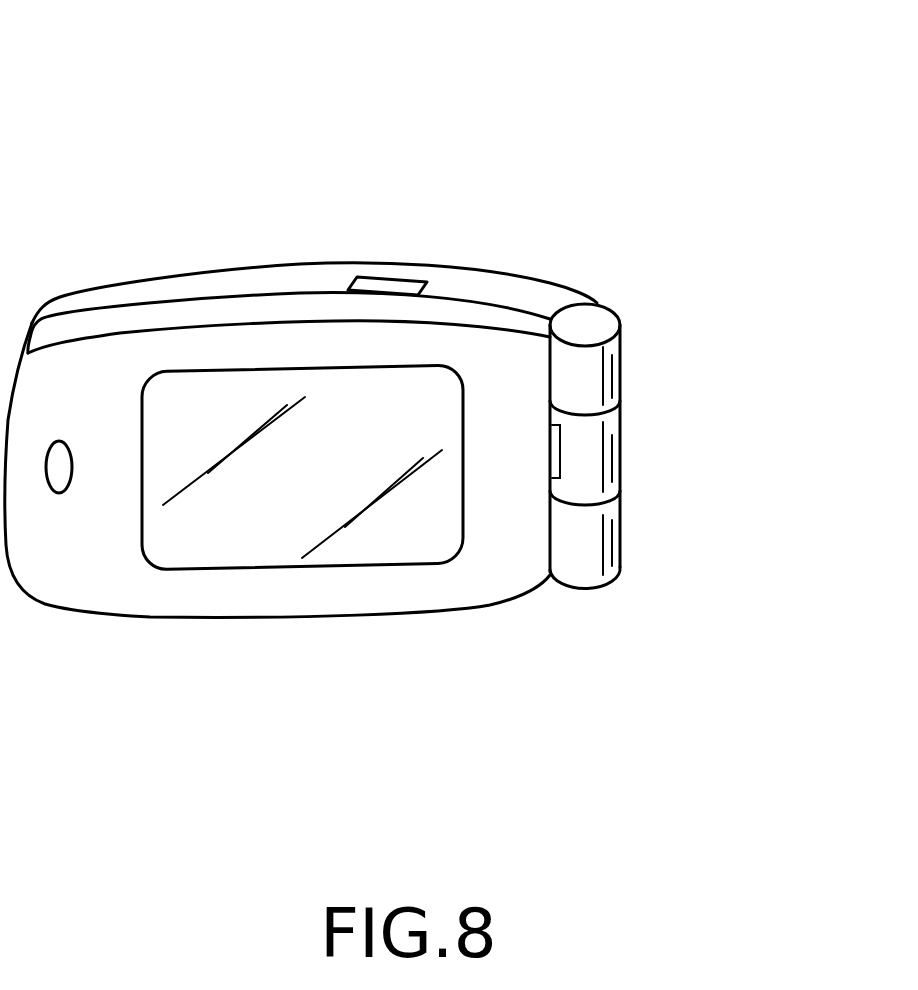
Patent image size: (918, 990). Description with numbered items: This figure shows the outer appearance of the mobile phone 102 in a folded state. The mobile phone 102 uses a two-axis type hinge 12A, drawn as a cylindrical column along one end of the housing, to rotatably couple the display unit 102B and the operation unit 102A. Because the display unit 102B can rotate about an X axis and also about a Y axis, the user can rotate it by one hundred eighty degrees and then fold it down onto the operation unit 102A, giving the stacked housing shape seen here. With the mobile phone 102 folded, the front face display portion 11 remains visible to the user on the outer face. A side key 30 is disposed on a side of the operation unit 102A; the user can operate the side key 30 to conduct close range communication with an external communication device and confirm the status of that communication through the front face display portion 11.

The mobile phone 102 is at (712, 146).
The operation unit 102A is at (200, 283).
The display unit 102B is at (85, 326).
The side key 30 is at (403, 290).
The two-axis type hinge 12A is at (603, 322).
The front face display portion 11 is at (255, 548).